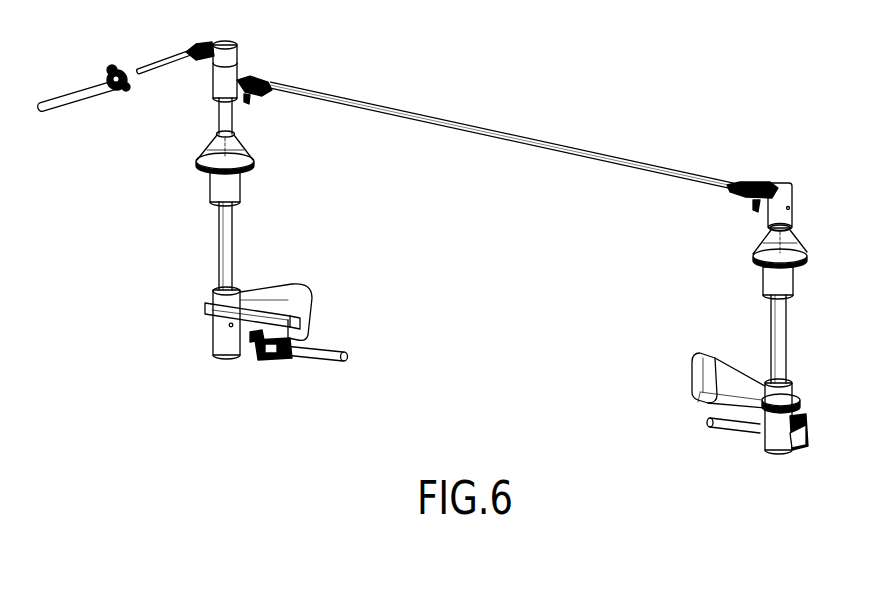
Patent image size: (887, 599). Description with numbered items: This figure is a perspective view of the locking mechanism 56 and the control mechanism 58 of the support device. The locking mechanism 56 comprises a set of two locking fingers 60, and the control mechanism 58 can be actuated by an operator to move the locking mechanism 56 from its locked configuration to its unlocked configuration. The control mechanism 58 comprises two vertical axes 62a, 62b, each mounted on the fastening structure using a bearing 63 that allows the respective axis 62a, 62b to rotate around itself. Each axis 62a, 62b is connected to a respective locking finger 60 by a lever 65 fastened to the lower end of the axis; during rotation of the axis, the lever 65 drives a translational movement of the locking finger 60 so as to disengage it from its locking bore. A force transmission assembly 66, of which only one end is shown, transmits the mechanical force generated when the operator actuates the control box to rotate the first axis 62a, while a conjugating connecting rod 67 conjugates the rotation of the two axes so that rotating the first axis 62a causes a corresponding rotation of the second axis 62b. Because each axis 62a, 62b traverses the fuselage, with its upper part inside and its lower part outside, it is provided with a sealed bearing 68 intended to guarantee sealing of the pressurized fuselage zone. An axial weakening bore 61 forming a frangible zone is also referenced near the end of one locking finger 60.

The locking mechanism 56 is at (755, 456).
The control mechanism 58 is at (800, 197).
The locking finger 60 is at (322, 365).
The axial weakening bore 61 is at (349, 357).
The first vertical axis 62a is at (220, 232).
The second vertical axis 62b is at (780, 333).
The bearing 63 is at (265, 300).
The lever 65 is at (242, 357).
The force transmission assembly 66 is at (62, 92).
The conjugating connecting rod 67 is at (487, 137).
The sealed bearing 68 is at (247, 157).